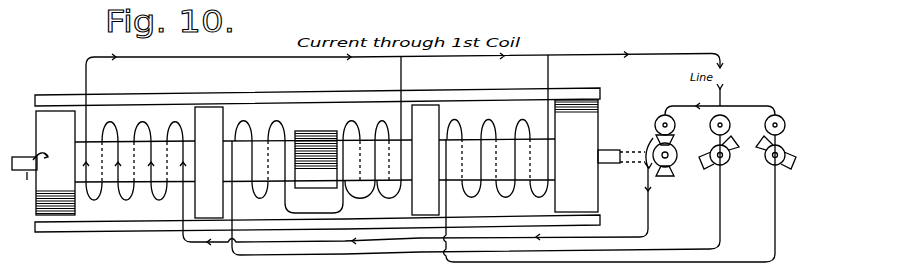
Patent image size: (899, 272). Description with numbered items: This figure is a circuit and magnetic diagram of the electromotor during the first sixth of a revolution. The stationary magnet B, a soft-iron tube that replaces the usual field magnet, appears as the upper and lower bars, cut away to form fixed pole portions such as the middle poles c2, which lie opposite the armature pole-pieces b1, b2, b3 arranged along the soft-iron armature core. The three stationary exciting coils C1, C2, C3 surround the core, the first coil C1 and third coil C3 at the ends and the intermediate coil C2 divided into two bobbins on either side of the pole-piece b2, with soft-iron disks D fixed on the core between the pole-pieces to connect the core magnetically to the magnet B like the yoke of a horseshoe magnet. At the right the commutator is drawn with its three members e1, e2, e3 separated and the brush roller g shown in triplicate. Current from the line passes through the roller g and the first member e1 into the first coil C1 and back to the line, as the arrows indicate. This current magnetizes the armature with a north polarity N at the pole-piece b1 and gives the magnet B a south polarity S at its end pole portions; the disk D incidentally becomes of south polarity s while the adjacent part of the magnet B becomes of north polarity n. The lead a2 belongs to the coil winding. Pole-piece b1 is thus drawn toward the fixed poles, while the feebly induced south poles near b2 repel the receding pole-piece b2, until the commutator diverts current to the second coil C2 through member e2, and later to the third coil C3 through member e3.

The stationary magnet B is at (162, 164).
The middle pole portion c2 is at (307, 159).
The south polarity S is at (44, 164).
The north polarity N is at (55, 163).
The north polarity of magnet n is at (206, 161).
The south polarity of disk s is at (262, 160).
The first armature pole-piece b1 is at (30, 160).
The middle armature pole-piece b2 is at (316, 153).
The third armature pole-piece b3 is at (609, 157).
The soft-iron disk D is at (317, 161).
The first coil C1 is at (369, 177).
The second coil C2 is at (476, 182).
The third coil C3 is at (610, 186).
The coil lead a2 is at (141, 193).
The roller g is at (714, 125).
The first commutator member e1 is at (662, 162).
The middle commutator member e2 is at (723, 152).
The third commutator member e3 is at (777, 152).